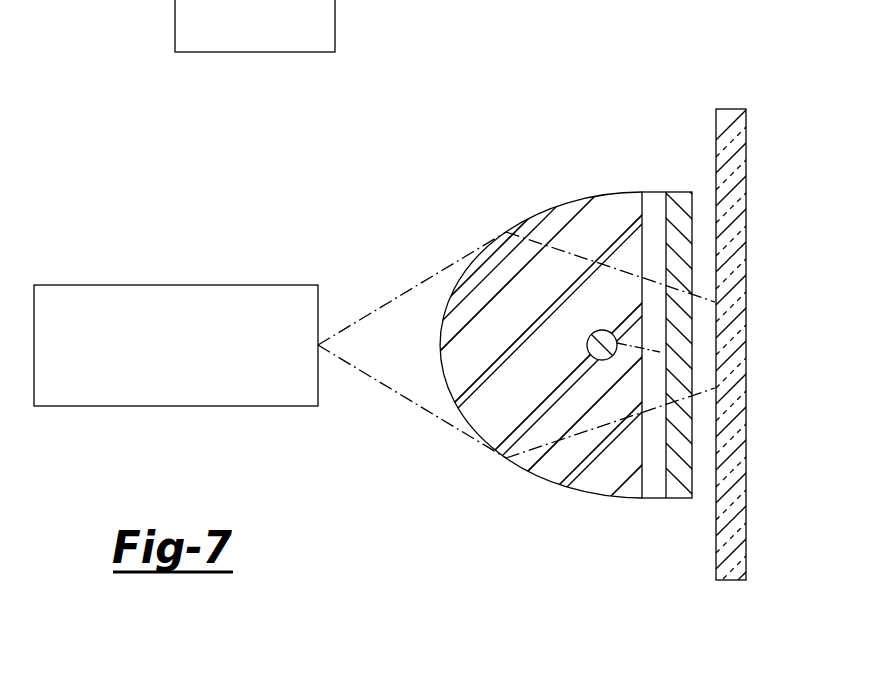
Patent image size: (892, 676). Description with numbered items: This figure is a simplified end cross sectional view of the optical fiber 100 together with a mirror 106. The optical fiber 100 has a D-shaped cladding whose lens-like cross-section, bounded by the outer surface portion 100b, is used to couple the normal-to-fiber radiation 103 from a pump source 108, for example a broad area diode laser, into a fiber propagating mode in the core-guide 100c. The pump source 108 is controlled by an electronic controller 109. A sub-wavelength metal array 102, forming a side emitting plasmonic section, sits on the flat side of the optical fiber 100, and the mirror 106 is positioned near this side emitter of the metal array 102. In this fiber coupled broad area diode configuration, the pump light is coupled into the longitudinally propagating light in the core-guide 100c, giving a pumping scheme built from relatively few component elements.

The optical fiber 100 is at (570, 346).
The outer surface portion 100b is at (558, 465).
The core-guide 100c is at (599, 360).
The metal array 102 is at (680, 200).
The normal-to-fiber radiation 103 is at (378, 330).
The mirror 106 is at (728, 122).
The pump source 108 is at (158, 387).
The electronic controller 109 is at (242, 44).